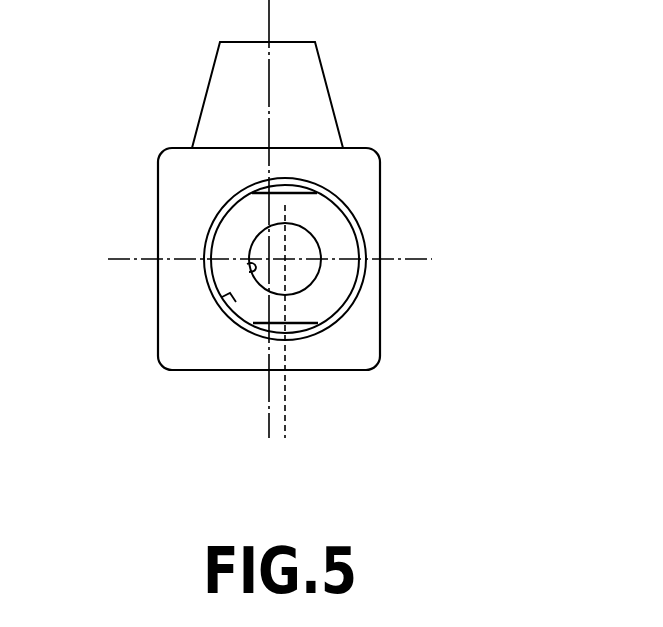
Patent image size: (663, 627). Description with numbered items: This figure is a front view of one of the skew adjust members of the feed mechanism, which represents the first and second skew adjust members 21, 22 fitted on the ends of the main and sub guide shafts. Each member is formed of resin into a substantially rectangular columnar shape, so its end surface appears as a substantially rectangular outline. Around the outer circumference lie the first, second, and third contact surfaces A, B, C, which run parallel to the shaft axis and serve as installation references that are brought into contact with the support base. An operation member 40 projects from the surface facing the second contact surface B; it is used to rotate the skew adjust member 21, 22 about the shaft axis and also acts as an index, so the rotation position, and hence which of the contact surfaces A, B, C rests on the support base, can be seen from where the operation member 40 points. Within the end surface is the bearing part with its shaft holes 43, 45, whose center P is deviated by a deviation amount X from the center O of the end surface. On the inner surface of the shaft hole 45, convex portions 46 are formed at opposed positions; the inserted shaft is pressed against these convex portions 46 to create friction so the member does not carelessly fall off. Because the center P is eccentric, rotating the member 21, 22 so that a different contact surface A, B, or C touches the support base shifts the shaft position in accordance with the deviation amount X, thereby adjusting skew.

The operation member 40 is at (320, 78).
The first skew adjust member 21 is at (340, 247).
The second skew adjust member 22 is at (269, 259).
The convex portion 46 is at (283, 186).
The shaft hole 43 is at (250, 270).
The shaft hole 45 is at (227, 305).
The center O is at (270, 267).
The first contact surface A is at (158, 236).
The second contact surface B is at (323, 370).
The third contact surface C is at (380, 232).
The center P is at (285, 260).
The deviation amount X is at (212, 420).